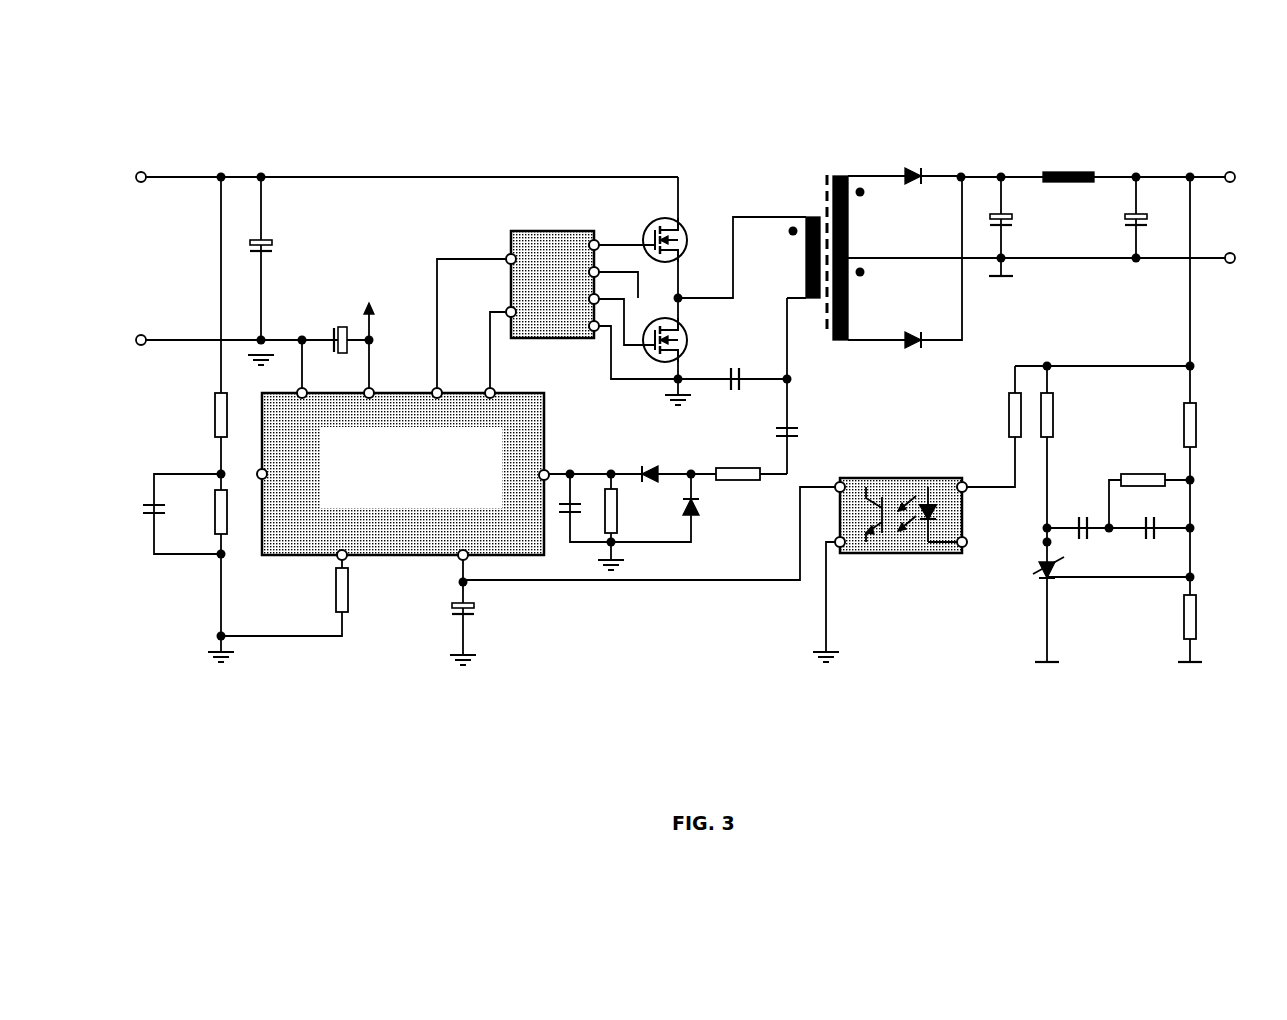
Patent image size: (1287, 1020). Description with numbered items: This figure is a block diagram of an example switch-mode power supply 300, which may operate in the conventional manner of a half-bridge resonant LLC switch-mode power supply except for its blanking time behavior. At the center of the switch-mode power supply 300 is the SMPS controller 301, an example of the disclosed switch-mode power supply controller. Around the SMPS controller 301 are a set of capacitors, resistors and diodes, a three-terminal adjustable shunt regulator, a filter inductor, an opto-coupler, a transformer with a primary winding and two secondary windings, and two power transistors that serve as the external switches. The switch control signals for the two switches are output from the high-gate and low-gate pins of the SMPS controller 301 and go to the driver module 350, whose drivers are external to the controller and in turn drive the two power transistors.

The switch-mode power supply 300 is at (680, 356).
The SMPS controller 301 is at (403, 474).
The driver module 350 is at (578, 338).